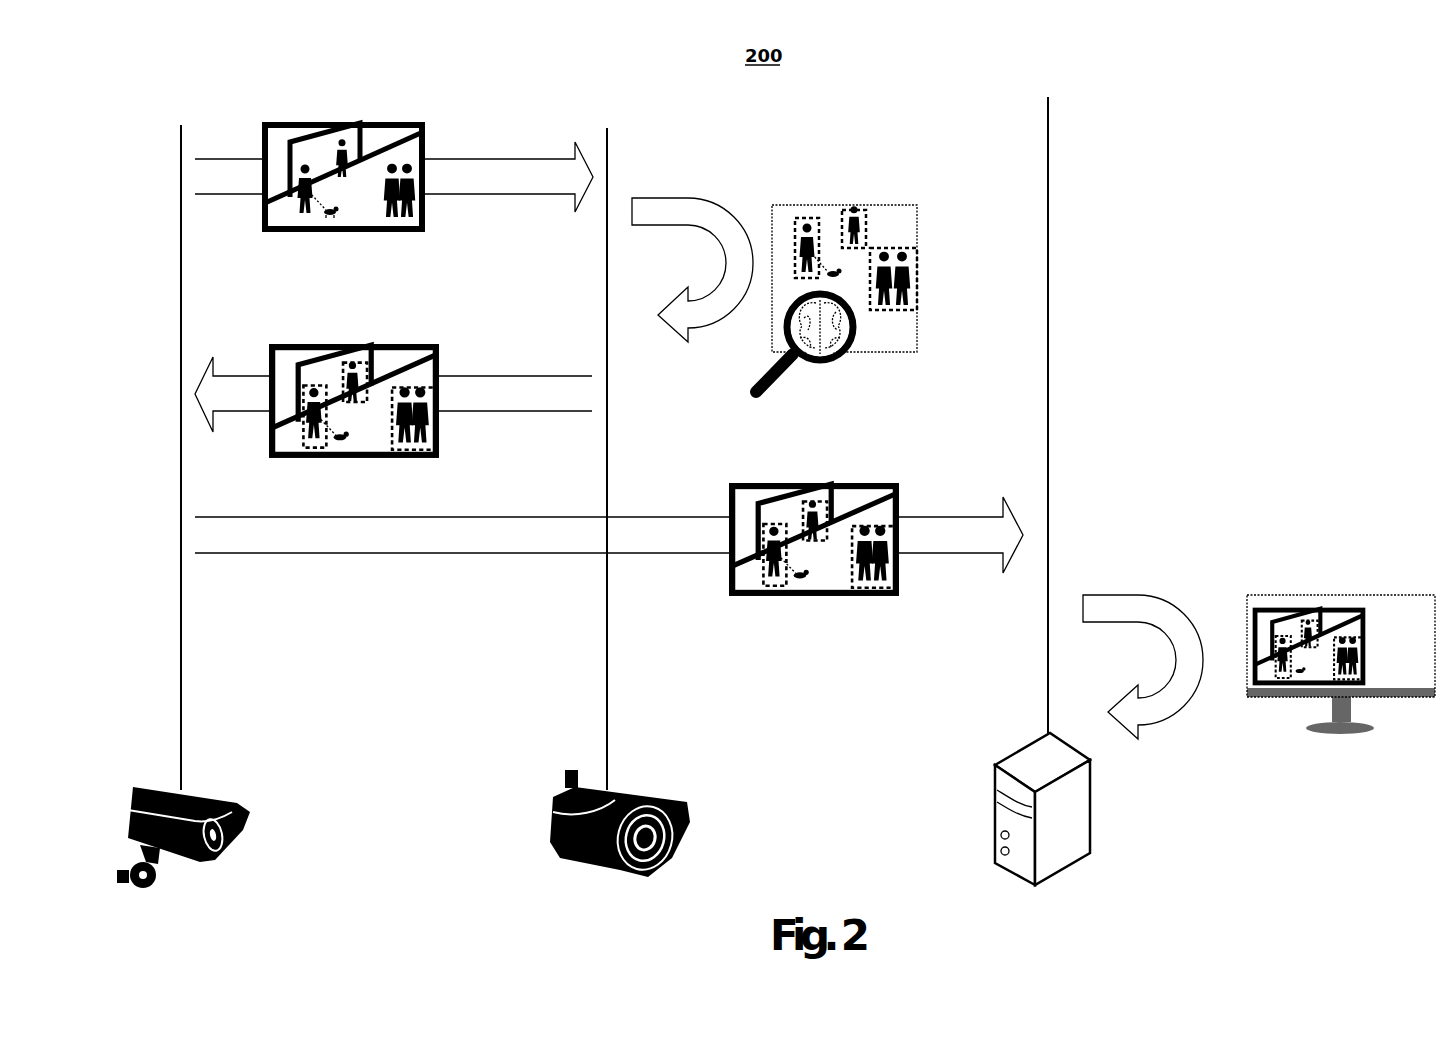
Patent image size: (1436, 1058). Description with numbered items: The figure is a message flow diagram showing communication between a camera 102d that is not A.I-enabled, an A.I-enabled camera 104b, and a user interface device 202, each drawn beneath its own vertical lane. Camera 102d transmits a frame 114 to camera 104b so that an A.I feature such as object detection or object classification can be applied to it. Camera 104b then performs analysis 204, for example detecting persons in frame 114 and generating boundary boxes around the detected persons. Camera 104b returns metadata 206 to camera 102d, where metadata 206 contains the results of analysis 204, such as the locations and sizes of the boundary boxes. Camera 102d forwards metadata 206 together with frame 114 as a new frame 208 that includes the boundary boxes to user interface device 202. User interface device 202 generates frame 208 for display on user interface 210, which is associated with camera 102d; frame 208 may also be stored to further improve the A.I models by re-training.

The frame 114 is at (314, 122).
The metadata 206 is at (318, 344).
The new frame 208 is at (742, 483).
The analysis 204 is at (838, 205).
The camera 102d is at (145, 786).
The A.I-enabled camera 104b is at (645, 790).
The user interface device 202 is at (997, 778).
The user interface 210 is at (1314, 595).